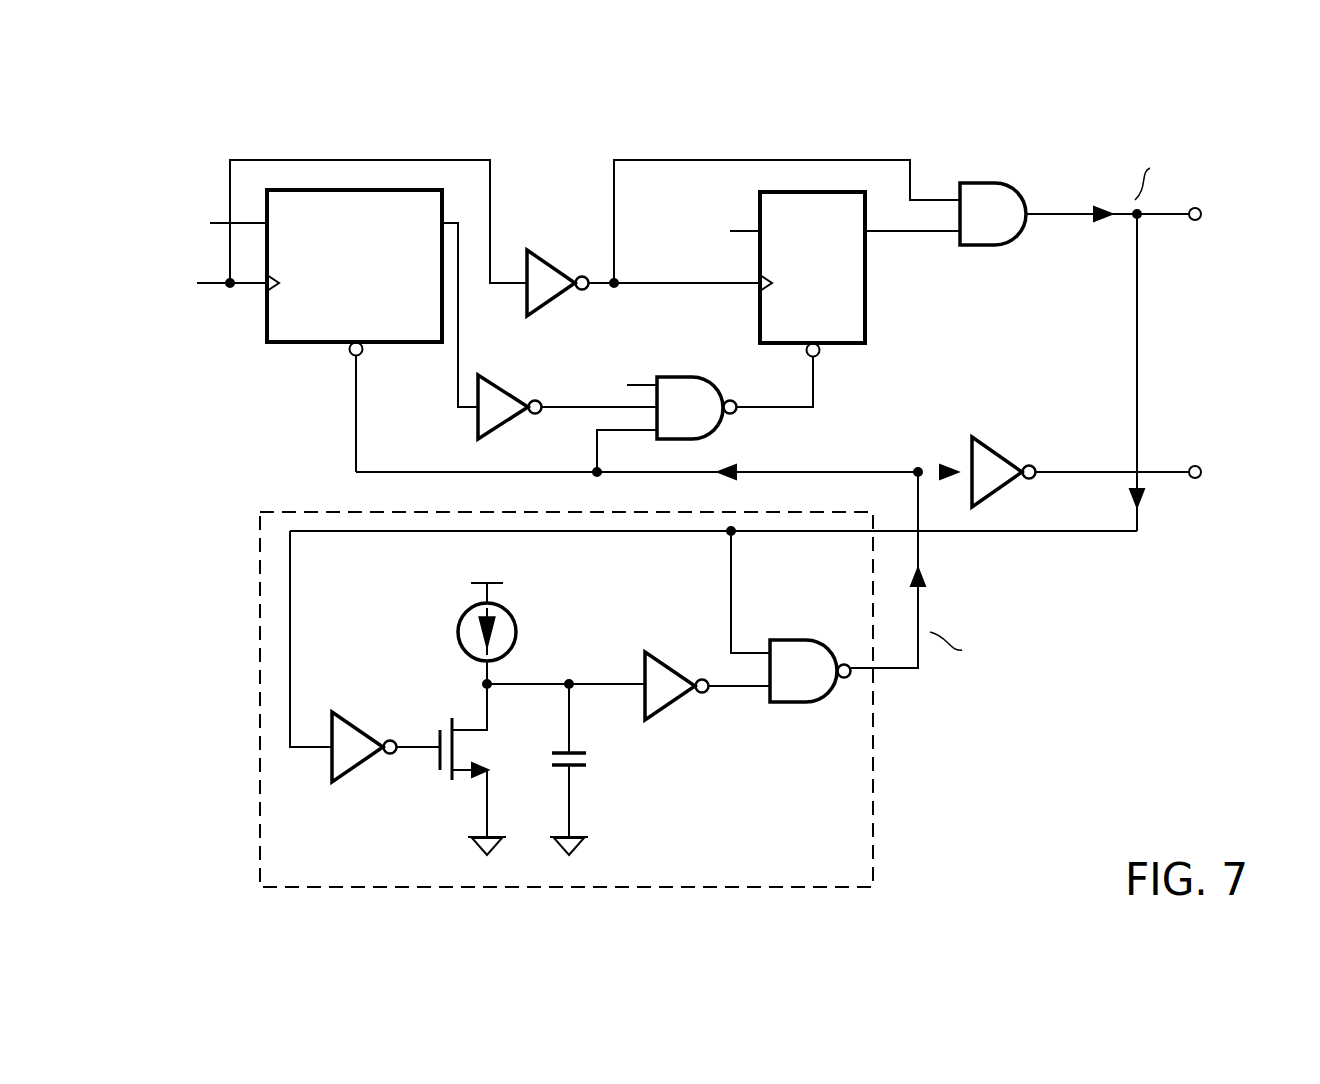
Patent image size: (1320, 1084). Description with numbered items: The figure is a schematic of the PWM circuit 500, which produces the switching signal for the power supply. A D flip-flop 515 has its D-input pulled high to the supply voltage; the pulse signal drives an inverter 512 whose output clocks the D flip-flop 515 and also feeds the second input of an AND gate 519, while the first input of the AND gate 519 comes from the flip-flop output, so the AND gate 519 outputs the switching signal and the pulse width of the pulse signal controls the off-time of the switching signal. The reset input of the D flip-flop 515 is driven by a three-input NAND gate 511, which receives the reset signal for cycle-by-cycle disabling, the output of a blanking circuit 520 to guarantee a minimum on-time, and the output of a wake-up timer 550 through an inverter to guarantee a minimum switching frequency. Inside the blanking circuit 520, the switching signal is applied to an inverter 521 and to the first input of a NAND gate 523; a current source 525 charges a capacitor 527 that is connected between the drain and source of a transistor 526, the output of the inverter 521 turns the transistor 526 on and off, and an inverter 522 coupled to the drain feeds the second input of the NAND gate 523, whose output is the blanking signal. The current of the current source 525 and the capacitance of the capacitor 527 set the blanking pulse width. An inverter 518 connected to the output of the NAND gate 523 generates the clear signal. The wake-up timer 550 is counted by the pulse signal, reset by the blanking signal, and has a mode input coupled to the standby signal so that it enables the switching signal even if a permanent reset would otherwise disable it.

The PWM circuit 500 is at (1267, 91).
The NAND gate 511 is at (686, 372).
The inverter 512 is at (548, 251).
The D flip-flop 515 is at (868, 331).
The inverter 518 is at (997, 443).
The AND gate 519 is at (983, 250).
The blanking circuit 520 is at (256, 583).
The inverter 521 is at (355, 717).
The inverter 522 is at (668, 660).
The NAND gate 523 is at (790, 705).
The current source 525 is at (522, 622).
The transistor 526 is at (446, 780).
The capacitor 527 is at (596, 757).
The wake-up timer 550 is at (285, 350).